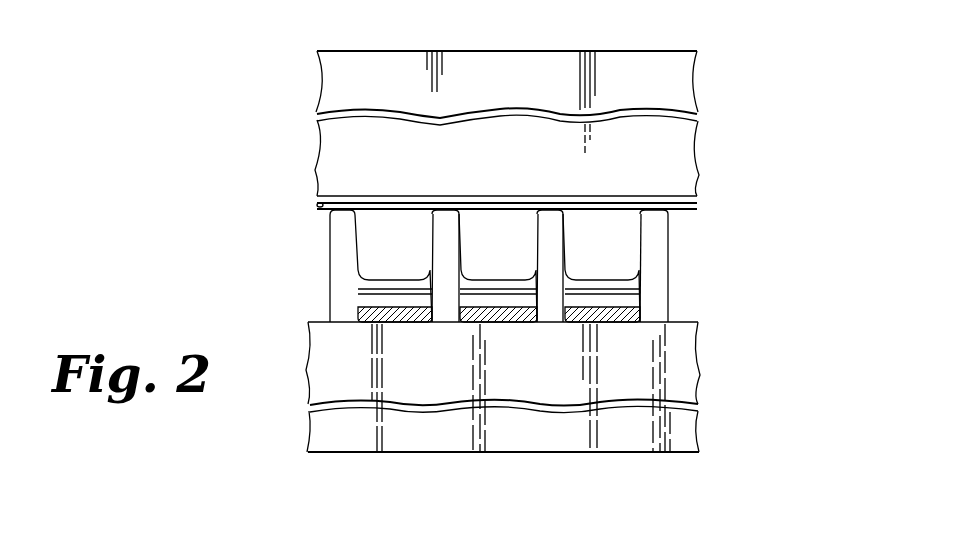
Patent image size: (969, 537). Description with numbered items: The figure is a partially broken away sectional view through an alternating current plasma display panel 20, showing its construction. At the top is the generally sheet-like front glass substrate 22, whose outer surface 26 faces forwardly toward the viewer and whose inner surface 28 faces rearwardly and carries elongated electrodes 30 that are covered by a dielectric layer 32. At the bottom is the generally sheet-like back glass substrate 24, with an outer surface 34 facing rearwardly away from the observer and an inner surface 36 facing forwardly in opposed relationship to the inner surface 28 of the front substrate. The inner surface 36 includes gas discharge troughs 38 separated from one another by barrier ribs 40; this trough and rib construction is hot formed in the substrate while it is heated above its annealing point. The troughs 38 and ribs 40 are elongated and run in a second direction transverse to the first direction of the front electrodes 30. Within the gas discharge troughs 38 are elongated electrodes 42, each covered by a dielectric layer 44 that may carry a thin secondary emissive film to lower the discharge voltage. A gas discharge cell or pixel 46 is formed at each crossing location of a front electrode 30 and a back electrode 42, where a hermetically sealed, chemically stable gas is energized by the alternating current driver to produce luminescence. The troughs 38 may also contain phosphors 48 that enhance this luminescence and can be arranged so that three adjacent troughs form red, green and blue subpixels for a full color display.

The plasma display panel 20 is at (760, 195).
The front glass substrate 22 is at (723, 88).
The back glass substrate 24 is at (722, 370).
The outer surface 26 is at (603, 51).
The inner surface 28 is at (627, 213).
The electrodes 30 is at (318, 204).
The dielectric layer 32 is at (320, 208).
The outer surface 34 is at (398, 453).
The inner surface 36 is at (482, 205).
The gas discharge troughs 38 is at (420, 322).
The barrier ribs 40 is at (352, 250).
The electrodes 42 is at (358, 318).
The dielectric layer 44 is at (365, 297).
The gas discharge cell 46 is at (375, 217).
The phosphors 48 is at (387, 280).